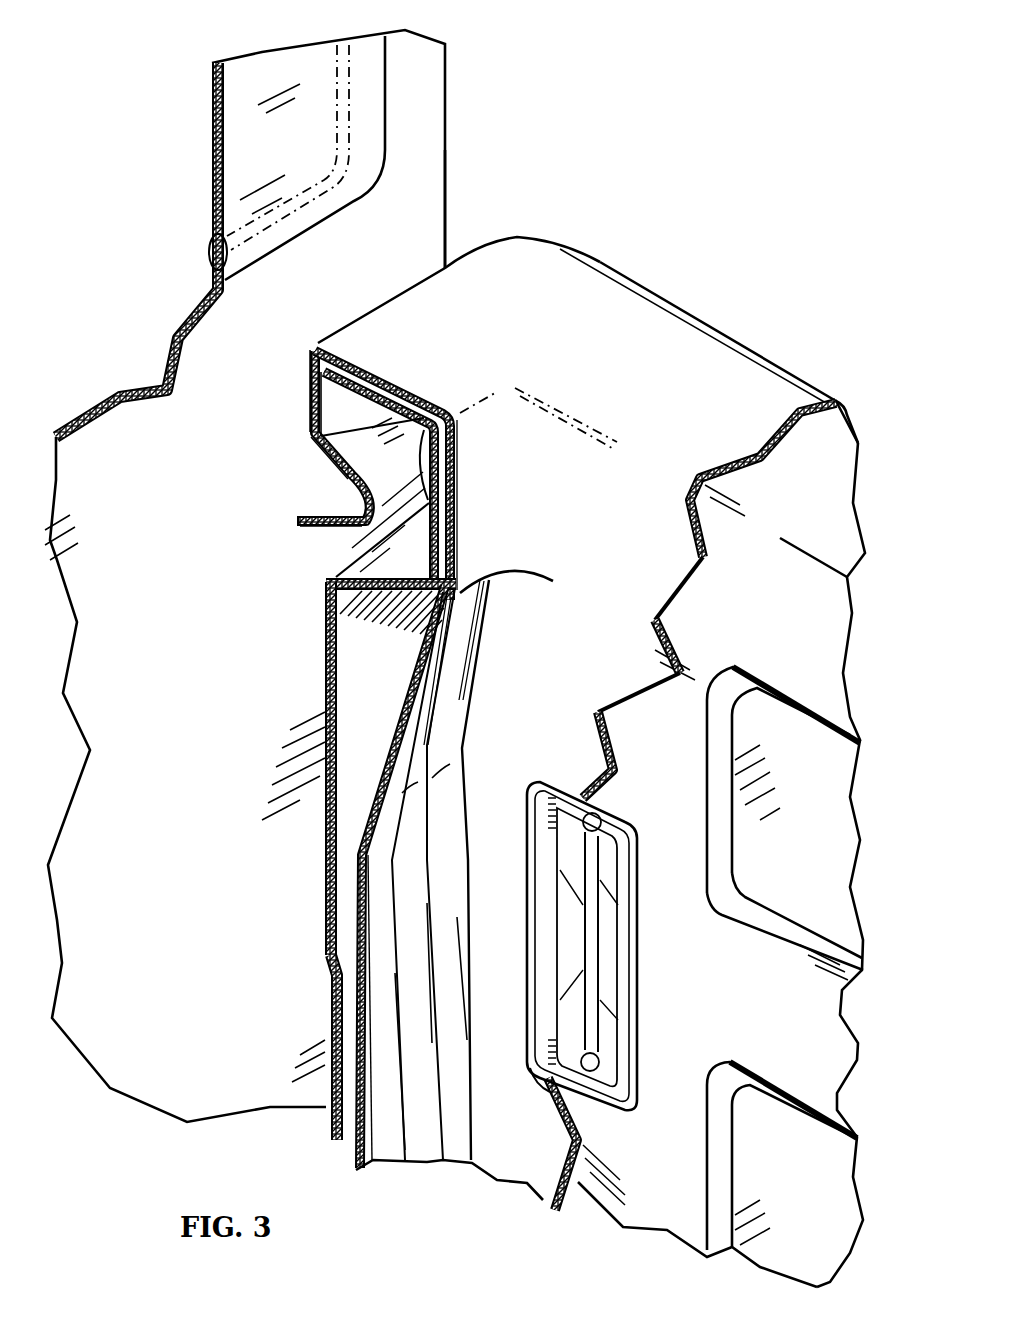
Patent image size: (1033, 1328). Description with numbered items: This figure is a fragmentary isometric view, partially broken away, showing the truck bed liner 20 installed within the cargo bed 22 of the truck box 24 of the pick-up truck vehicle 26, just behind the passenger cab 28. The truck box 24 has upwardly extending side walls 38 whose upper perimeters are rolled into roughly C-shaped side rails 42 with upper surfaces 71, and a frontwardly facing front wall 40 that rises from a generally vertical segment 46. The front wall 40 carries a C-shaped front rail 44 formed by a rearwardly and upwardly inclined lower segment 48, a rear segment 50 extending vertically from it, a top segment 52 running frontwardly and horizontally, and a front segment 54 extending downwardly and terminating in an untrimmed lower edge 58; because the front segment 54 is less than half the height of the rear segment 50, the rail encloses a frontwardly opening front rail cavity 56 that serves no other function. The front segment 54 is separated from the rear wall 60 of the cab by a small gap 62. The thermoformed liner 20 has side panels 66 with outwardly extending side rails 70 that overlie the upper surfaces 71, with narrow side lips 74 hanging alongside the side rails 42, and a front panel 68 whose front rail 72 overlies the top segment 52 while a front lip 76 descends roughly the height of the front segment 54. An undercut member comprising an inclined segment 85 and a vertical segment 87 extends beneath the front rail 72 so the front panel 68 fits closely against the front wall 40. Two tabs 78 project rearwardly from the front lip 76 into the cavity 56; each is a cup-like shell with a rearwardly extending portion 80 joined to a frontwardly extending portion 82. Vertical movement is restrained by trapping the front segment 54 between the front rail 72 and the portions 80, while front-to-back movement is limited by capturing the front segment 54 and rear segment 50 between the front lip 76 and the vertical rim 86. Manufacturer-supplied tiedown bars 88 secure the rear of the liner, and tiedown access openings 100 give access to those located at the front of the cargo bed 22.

The truck bed liner 20 is at (652, 259).
The cargo bed 22 is at (815, 558).
The truck box 24 is at (651, 1230).
The vehicle 26 is at (470, 81).
The passenger cab 28 is at (447, 132).
The side walls 38 is at (785, 852).
The front wall 40 is at (325, 897).
The side rails 42 is at (829, 427).
The front rail 44 is at (366, 466).
The vertical segment 46 is at (325, 693).
The lower segment 48 is at (376, 616).
The rear segment 50 is at (408, 533).
The top segment 52 is at (425, 402).
The front segment 54 is at (322, 417).
The front rail cavity 56 is at (322, 573).
The lower edge 58 is at (372, 424).
The rear wall 60 is at (185, 779).
The gap 62 is at (446, 238).
The side panels 66 is at (690, 580).
The front panel 68 is at (390, 1168).
The side rails 70 is at (698, 328).
The upper surfaces 71 is at (776, 529).
The front rail 72 is at (459, 290).
The side lips 74 is at (838, 420).
The front lip 76 is at (309, 386).
The tabs 78 is at (297, 524).
The rearwardly extending portion 80 is at (310, 447).
The frontwardly extending portion 82 is at (330, 528).
The inclined segment 85 is at (390, 723).
The vertical rim 86 is at (489, 505).
The vertical segment 87 is at (356, 852).
The tiedown bars 88 is at (552, 934).
The tiedown access openings 100 is at (548, 1088).